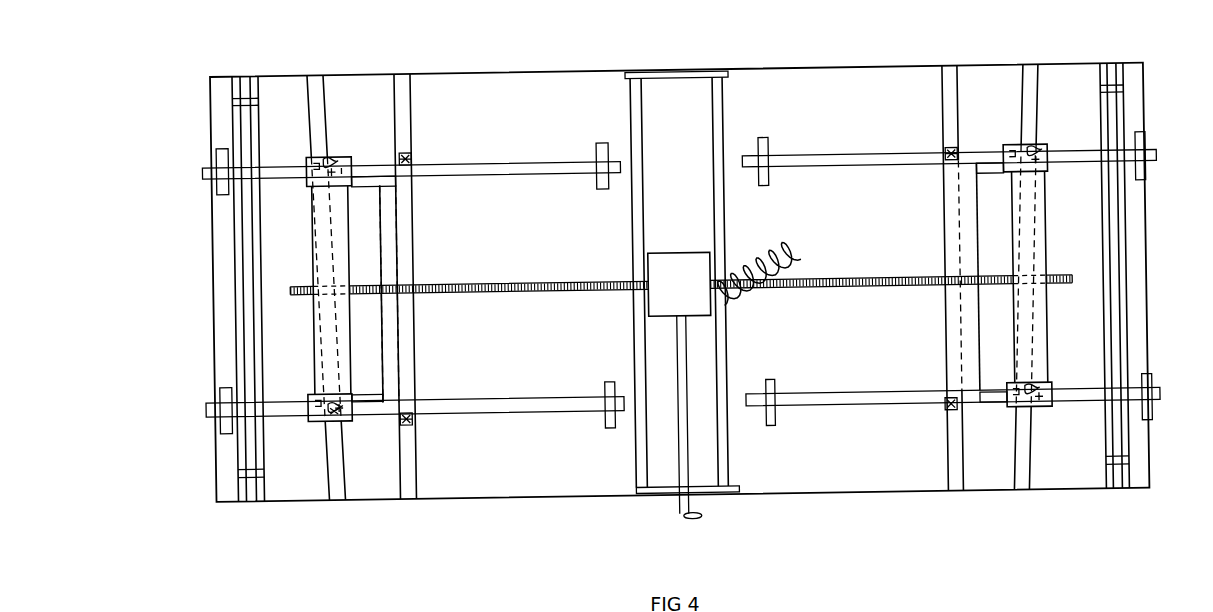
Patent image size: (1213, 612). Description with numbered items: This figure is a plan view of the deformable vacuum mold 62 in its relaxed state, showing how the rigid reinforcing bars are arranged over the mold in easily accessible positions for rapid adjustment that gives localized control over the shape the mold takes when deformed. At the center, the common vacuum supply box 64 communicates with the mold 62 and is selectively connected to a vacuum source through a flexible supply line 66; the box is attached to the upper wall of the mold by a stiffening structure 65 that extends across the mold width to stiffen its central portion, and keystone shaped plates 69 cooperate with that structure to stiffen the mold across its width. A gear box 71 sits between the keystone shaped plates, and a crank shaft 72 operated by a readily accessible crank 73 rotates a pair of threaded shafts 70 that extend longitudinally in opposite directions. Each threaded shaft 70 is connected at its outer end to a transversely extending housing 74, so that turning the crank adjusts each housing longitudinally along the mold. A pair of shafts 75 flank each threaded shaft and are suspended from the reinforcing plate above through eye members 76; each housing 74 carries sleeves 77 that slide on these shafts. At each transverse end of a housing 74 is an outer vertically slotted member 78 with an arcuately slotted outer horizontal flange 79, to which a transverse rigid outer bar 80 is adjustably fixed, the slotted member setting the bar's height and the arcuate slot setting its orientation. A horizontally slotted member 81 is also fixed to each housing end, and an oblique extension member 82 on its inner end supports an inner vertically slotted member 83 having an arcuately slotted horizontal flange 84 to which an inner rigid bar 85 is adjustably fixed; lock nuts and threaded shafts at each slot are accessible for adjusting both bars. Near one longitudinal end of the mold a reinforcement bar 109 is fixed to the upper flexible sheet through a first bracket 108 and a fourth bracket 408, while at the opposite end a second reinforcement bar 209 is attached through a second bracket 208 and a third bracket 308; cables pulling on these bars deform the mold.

The deformable vacuum mold 62 is at (830, 68).
The common vacuum supply box 64 is at (686, 155).
The stiffening structure 65 is at (722, 92).
The flexible supply line 66 is at (797, 262).
The keystone shaped plates 69 is at (722, 496).
The threaded shafts 70 is at (540, 290).
The gear box 71 is at (668, 253).
The crank shaft 72 is at (680, 448).
The crank 73 is at (688, 518).
The transversely extending housing 74 is at (318, 334).
The shafts 75 is at (514, 165).
The eye members 76 is at (218, 195).
The sleeves 77 is at (320, 425).
The outer vertically slotted members 78 is at (318, 396).
The arcuately slotted outer horizontal flanges 79 is at (340, 158).
The transverse rigid outer bar 80 is at (324, 96).
The horizontally slotted member 81 is at (362, 188).
The oblique extension member 82 is at (385, 420).
The inner vertically slotted member 83 is at (413, 156).
The arcuately slotted horizontal flange 84 is at (412, 425).
The inner rigid bar 85 is at (412, 93).
The first bracket 108 is at (1128, 460).
The reinforcement bar 109 is at (1120, 290).
The second bracket 208 is at (235, 475).
The second reinforcement bar 209 is at (240, 340).
The third bracket 308 is at (233, 99).
The fourth bracket 408 is at (1123, 88).